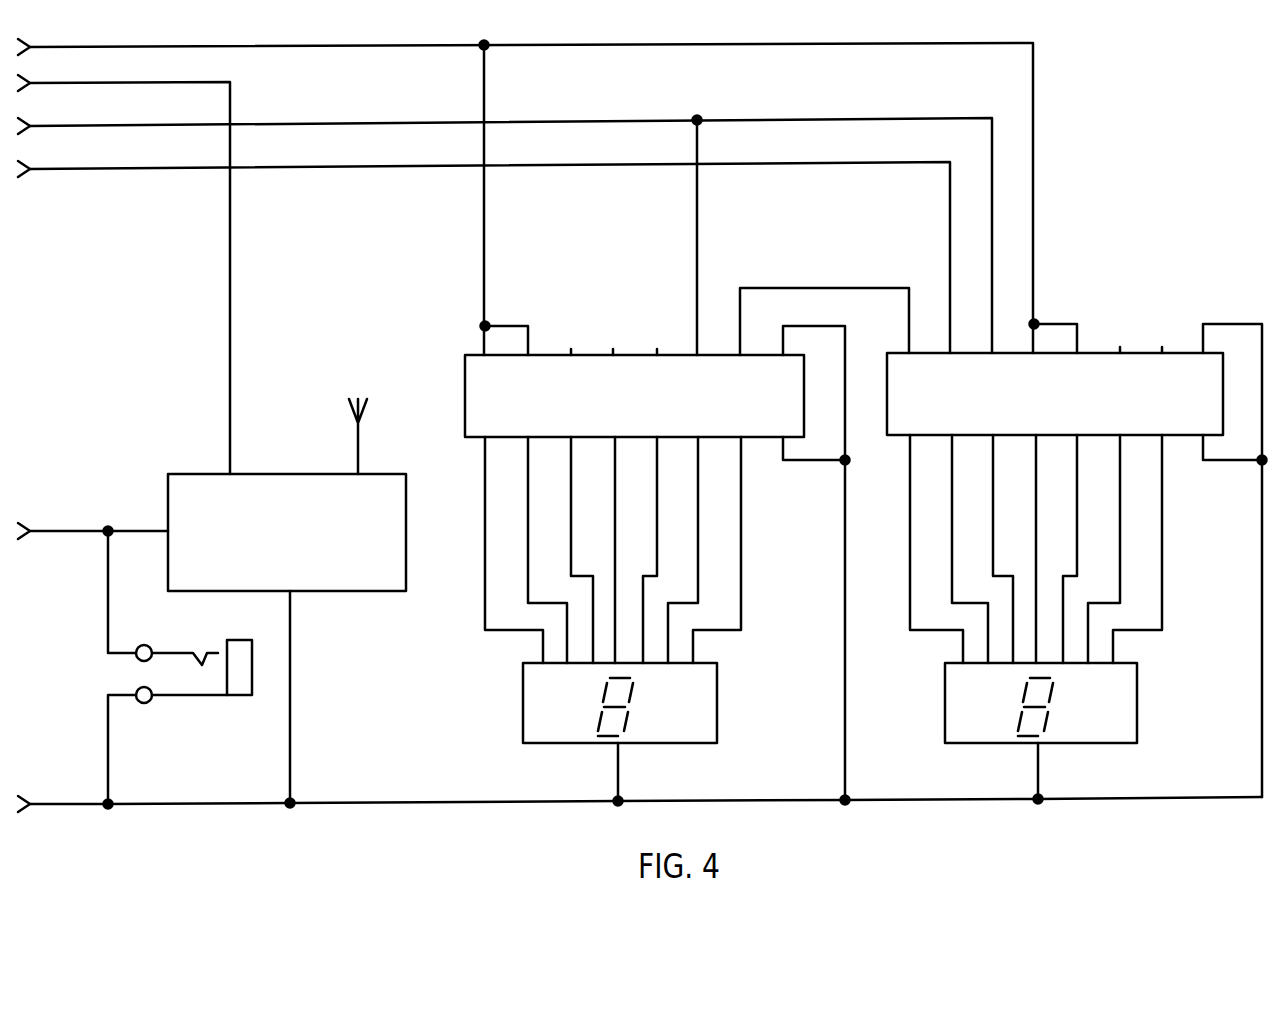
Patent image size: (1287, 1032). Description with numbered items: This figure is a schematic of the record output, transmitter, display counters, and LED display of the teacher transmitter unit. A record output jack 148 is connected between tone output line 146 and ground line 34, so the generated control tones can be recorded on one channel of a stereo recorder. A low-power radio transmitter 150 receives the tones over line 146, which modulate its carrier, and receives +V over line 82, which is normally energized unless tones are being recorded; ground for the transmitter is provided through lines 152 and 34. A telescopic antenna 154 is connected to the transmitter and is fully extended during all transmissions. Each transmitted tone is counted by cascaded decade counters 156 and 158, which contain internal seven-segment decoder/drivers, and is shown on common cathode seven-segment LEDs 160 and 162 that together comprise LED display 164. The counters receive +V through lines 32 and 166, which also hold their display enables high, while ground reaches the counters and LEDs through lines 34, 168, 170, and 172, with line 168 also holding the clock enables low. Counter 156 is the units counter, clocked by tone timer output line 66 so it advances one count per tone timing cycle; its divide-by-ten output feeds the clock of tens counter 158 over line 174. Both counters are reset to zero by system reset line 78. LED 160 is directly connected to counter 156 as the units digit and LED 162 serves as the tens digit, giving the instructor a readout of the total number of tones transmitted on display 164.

The +V supply line 32 is at (60, 48).
The transmitter +V line 82 is at (60, 84).
The system reset line 78 is at (60, 127).
The tone timer output line 66 is at (60, 170).
The +V counter line 166 is at (484, 252).
The carry line 174 is at (845, 287).
The ground line 168 is at (845, 668).
The tens decade counter 158 is at (641, 352).
The units decade counter 156 is at (1148, 352).
The tens seven-segment LED 162 is at (523, 703).
The units seven-segment LED 160 is at (945, 703).
The LED display 164 is at (1052, 607).
The display ground line 172 is at (618, 778).
The display ground line 170 is at (1038, 778).
The radio transmitter 150 is at (340, 591).
The telescopic antenna 154 is at (358, 450).
The tone output line 146 is at (48, 531).
The record output jack 148 is at (218, 705).
The transmitter ground line 152 is at (290, 735).
The ground line 34 is at (48, 804).